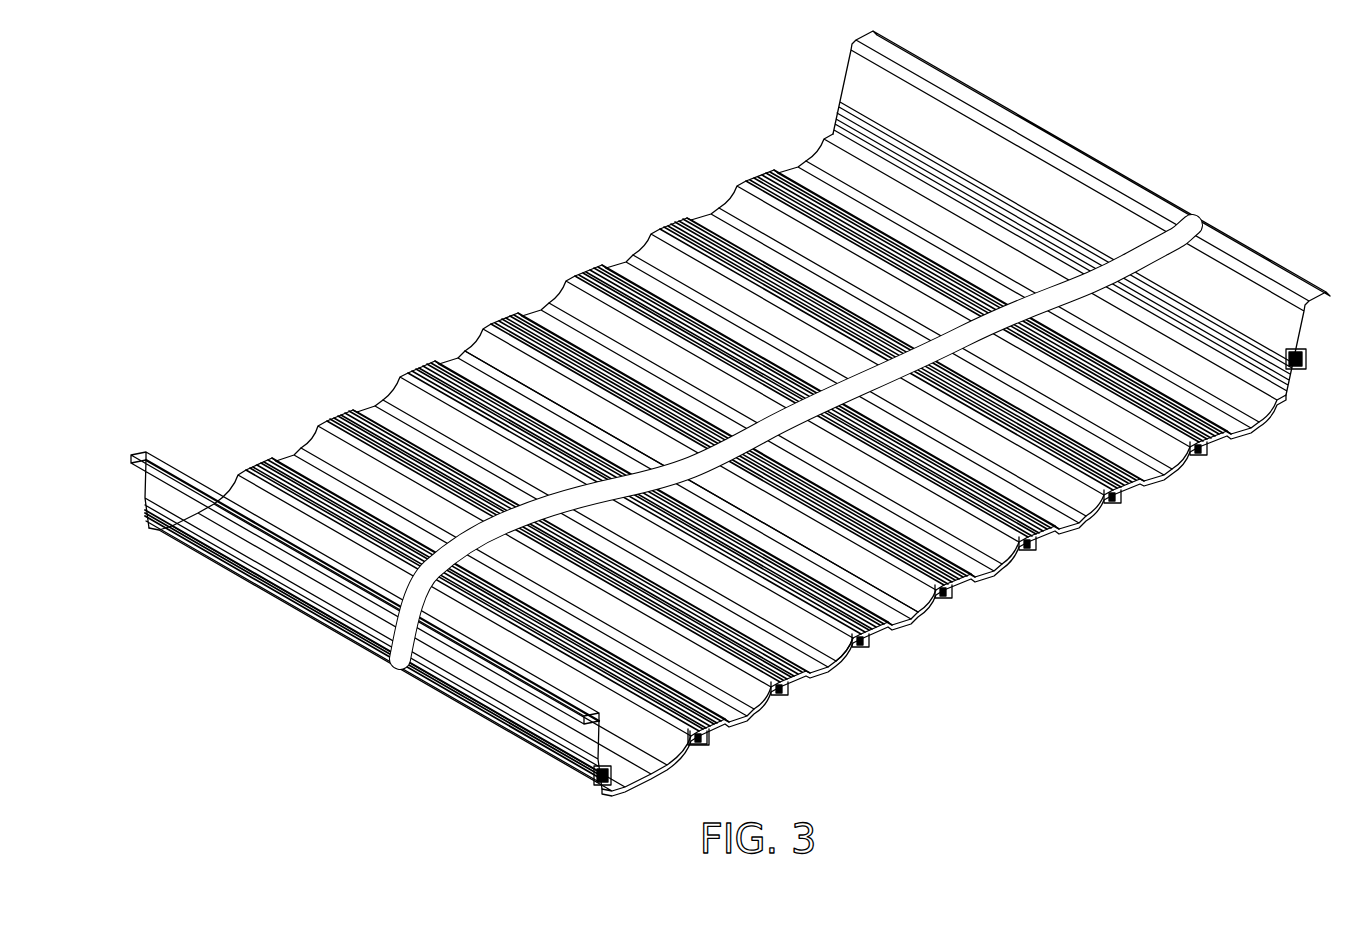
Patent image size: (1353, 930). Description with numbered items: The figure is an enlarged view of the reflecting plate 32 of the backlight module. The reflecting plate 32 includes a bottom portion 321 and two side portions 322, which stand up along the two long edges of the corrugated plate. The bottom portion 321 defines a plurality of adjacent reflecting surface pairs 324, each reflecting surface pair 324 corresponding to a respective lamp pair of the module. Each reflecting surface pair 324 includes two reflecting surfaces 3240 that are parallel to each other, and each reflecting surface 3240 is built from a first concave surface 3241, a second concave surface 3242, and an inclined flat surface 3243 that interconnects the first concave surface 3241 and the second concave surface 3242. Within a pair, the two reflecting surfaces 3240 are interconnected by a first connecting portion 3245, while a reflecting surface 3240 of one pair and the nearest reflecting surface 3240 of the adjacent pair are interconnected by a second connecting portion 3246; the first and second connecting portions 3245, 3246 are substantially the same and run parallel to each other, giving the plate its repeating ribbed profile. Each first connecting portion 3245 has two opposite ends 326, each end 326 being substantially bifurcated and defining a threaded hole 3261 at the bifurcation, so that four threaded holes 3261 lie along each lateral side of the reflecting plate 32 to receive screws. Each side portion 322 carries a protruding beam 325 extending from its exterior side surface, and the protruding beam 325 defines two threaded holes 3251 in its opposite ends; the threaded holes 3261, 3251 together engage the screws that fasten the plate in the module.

The reflecting plate 32 is at (730, 423).
The bottom portion 321 is at (585, 312).
The side portion 322 is at (1227, 283).
The reflecting surface pair 324 is at (1070, 642).
The reflecting surface 3240 is at (906, 601).
The first concave surface 3241 is at (800, 685).
The second concave surface 3242 is at (853, 653).
The inclined flat surface 3243 is at (838, 670).
The first connecting portion 3245 is at (420, 365).
The second connecting portion 3246 is at (337, 412).
The protruding beam 325 is at (472, 686).
The end 326 is at (710, 740).
The threaded hole 3261 is at (703, 745).
The threaded hole 3251 is at (1293, 373).